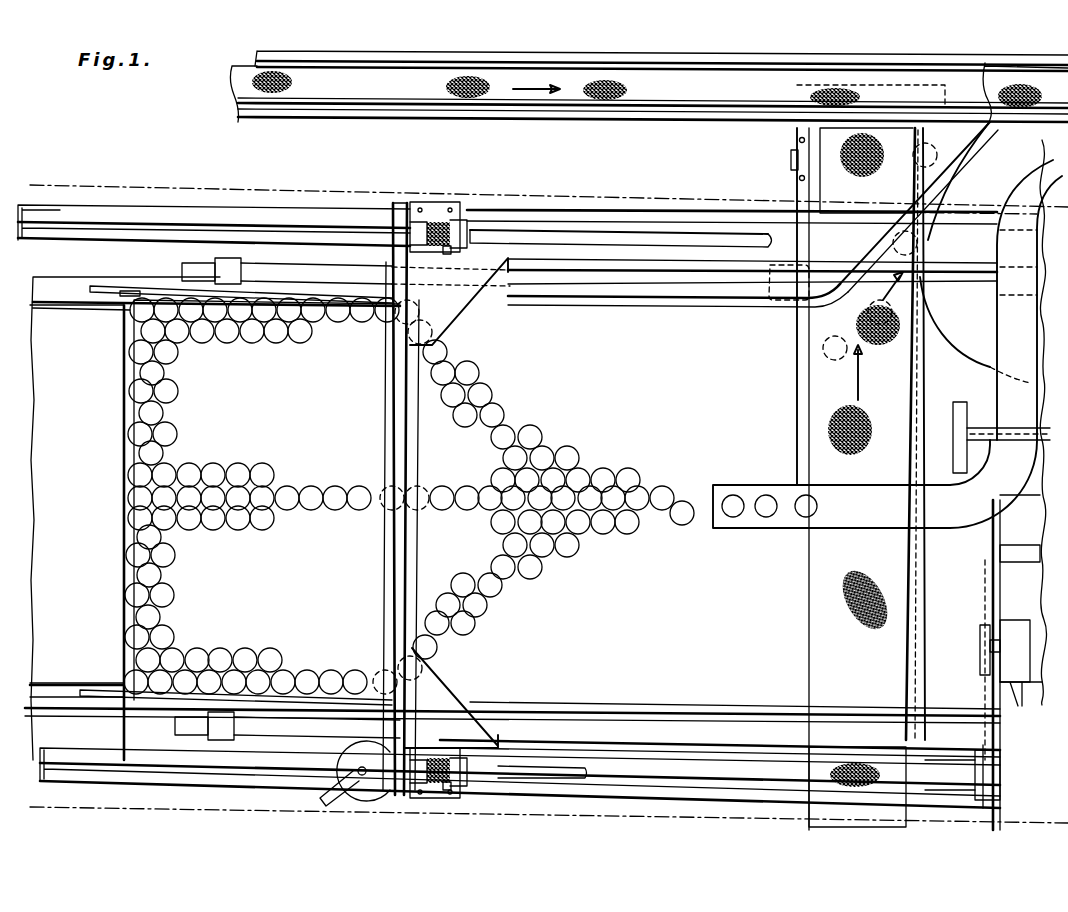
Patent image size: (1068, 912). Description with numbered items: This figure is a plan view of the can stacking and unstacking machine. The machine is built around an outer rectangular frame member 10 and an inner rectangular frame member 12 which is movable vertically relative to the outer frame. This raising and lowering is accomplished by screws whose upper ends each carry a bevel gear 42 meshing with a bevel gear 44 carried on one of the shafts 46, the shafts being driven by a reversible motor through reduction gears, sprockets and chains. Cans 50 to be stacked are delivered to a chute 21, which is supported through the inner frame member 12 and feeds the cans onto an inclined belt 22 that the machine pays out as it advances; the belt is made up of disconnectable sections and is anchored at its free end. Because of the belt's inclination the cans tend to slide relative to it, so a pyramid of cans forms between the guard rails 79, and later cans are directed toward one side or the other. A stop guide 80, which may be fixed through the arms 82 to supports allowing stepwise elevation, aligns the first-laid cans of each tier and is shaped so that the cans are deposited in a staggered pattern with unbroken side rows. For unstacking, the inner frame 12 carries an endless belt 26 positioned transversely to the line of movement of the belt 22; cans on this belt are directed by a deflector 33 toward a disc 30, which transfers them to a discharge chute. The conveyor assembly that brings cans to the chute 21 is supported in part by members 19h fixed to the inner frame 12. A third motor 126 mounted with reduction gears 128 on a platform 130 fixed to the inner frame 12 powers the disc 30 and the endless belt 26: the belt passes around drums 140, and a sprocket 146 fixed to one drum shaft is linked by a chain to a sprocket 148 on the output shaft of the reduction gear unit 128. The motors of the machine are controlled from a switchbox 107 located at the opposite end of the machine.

The outer rectangular frame member 10 is at (506, 216).
The inner rectangular frame member 12 is at (598, 268).
The members 19h is at (962, 474).
The chute 21 is at (866, 502).
The inclined belt 22 is at (268, 403).
The endless belt 26 is at (826, 598).
The disc 30 is at (977, 289).
The deflector 33 is at (870, 258).
The bevel gear 42 is at (438, 222).
The bevel gear 44 is at (448, 258).
The shafts 46 is at (690, 232).
The cans 50 is at (270, 510).
The guard rails 79 is at (217, 297).
The stop guide 80 is at (126, 528).
The arms 82 is at (76, 306).
The switchbox 107 is at (352, 750).
The third motor 126 is at (1012, 555).
The reduction gears 128 is at (1010, 660).
The platform 130 is at (1015, 686).
The drums 140 is at (805, 812).
The sprocket 146 is at (980, 805).
The sprocket 148 is at (988, 640).